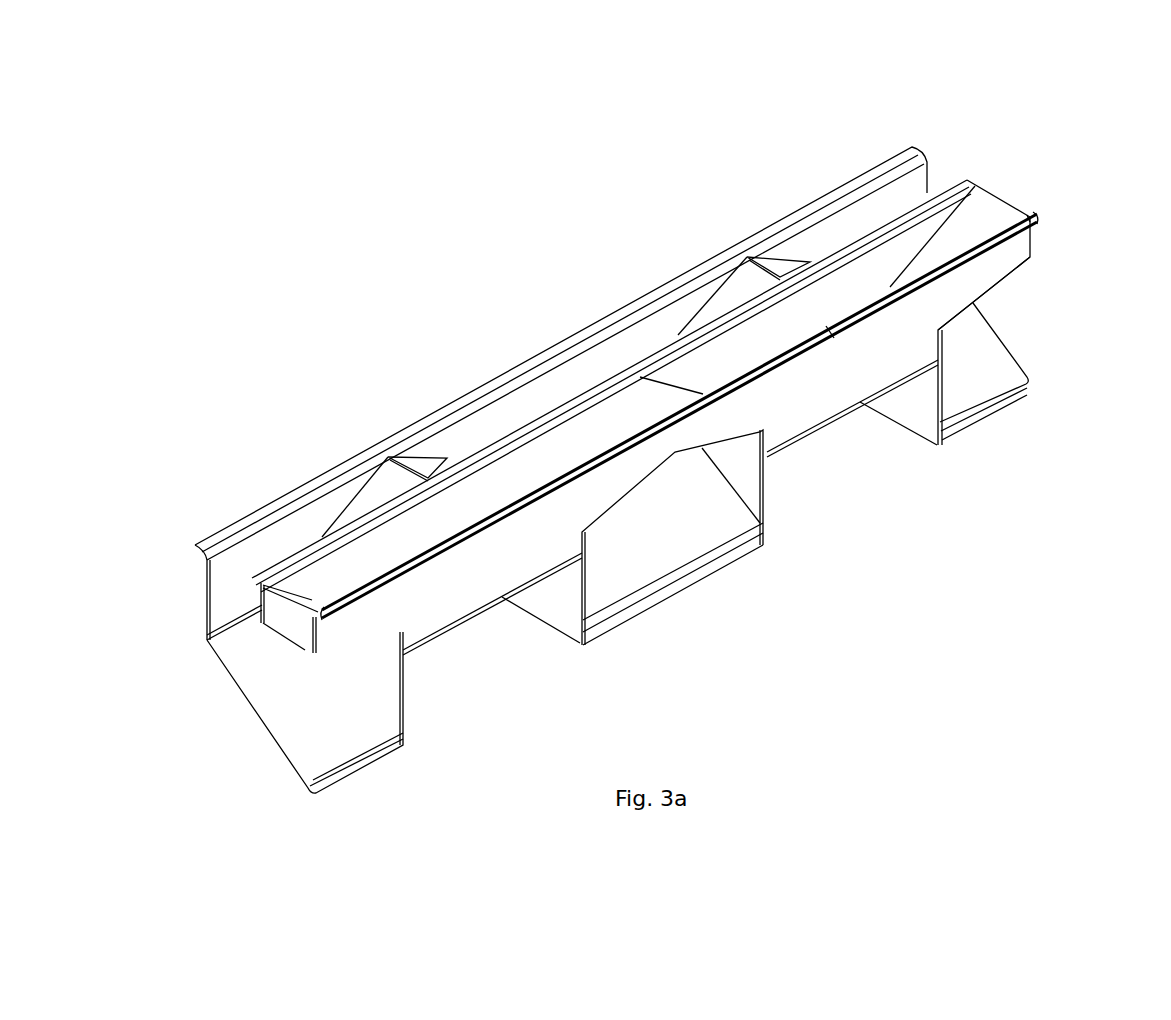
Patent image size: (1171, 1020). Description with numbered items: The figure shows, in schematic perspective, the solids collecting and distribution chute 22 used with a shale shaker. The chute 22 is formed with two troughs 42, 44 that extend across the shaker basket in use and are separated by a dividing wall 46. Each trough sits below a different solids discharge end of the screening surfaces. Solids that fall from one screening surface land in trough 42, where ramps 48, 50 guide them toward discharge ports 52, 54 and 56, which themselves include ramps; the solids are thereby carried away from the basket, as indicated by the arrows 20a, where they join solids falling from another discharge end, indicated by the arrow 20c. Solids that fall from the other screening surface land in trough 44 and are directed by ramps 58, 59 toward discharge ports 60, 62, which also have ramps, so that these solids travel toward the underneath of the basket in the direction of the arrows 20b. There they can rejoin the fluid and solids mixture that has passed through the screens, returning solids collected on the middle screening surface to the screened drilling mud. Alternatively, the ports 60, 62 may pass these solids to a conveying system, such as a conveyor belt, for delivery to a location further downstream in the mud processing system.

The arrows 20a is at (868, 200).
The arrows 20b is at (715, 250).
The arrows 20c is at (1085, 240).
The solids collecting and distribution chute 22 is at (967, 180).
The trough 42 is at (517, 412).
The trough 44 is at (1000, 205).
The wall 46 is at (642, 350).
The ramp 48 is at (370, 488).
The ramp 50 is at (447, 444).
The discharge port 52 is at (285, 712).
The discharge port 54 is at (632, 572).
The discharge port 56 is at (985, 340).
The ramp 58 is at (637, 424).
The ramp 59 is at (1033, 218).
The discharge port 60 is at (438, 547).
The discharge port 62 is at (830, 332).